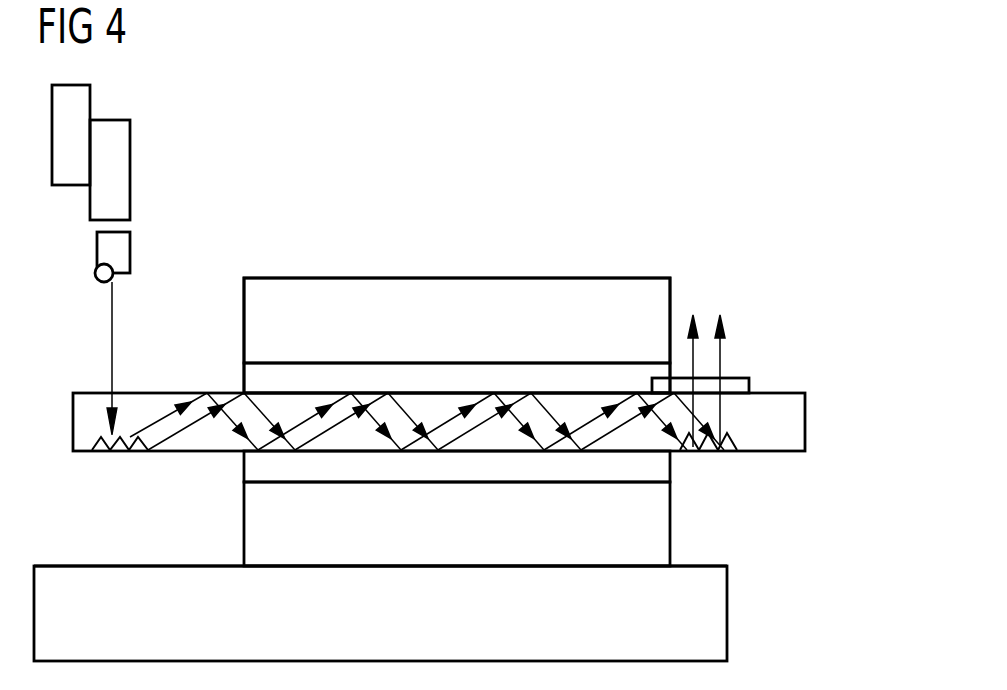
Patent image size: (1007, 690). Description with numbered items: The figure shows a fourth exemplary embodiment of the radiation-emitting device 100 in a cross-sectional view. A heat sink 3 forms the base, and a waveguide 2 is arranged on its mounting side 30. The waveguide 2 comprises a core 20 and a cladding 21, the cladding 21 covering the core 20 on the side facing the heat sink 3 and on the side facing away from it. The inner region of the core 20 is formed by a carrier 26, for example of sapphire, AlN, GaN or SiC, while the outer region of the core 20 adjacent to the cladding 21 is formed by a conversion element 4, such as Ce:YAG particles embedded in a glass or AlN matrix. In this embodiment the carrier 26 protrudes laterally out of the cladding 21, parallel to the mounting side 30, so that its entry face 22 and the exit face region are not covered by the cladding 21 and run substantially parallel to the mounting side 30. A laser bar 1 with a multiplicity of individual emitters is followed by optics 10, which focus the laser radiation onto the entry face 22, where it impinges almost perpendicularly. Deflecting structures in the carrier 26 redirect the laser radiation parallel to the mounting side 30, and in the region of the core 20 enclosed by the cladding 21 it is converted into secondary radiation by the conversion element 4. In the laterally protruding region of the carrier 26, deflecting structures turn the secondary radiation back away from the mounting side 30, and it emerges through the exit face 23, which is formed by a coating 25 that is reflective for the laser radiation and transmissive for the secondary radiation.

The radiation-emitting device 100 is at (705, 153).
The laser bar 1 is at (112, 128).
The optics 10 is at (100, 250).
The waveguide 2 is at (635, 278).
The core 20 is at (545, 400).
The cladding 21 is at (345, 287).
The entry face 22 is at (143, 390).
The exit face 23 is at (745, 374).
The coating 25 is at (740, 385).
The carrier 26 is at (797, 423).
The heat sink 3 is at (718, 613).
The mounting side 30 is at (148, 564).
The conversion element 4 is at (457, 377).